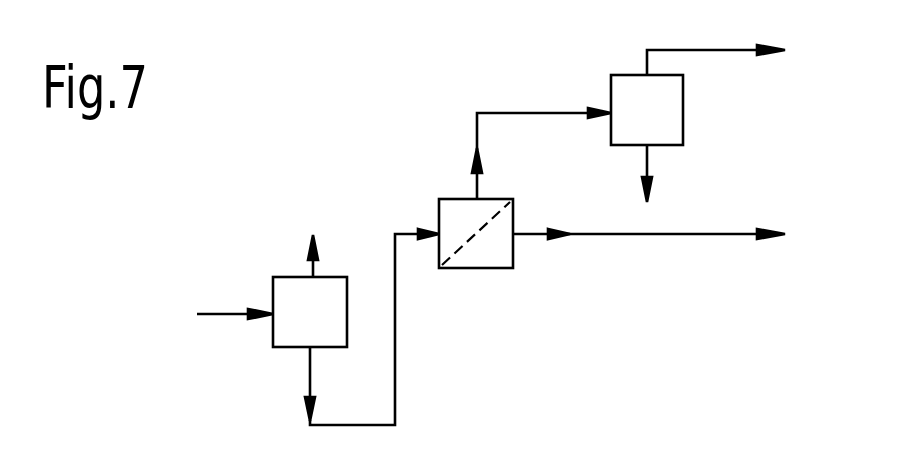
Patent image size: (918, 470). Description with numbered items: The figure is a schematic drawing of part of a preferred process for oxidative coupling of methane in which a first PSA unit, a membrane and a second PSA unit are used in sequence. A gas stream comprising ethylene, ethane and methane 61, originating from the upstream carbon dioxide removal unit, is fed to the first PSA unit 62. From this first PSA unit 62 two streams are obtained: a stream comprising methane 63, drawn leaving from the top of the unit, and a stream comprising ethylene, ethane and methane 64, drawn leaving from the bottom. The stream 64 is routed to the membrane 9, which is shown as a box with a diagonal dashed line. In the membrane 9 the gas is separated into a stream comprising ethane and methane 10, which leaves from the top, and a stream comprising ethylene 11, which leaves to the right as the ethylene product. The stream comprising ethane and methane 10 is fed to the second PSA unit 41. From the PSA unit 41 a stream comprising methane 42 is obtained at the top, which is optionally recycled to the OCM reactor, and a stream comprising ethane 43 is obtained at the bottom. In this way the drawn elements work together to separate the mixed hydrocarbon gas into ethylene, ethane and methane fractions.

The membrane 9 is at (476, 215).
The stream comprising ethane and methane 10 is at (541, 137).
The stream comprising ethylene 11 is at (649, 219).
The PSA unit 41 is at (647, 110).
The stream comprising methane 42 is at (716, 43).
The stream comprising ethane 43 is at (663, 173).
The gas stream comprising ethylene, ethane and methane 61 is at (235, 296).
The first PSA unit 62 is at (326, 312).
The stream comprising methane 63 is at (296, 256).
The stream comprising ethylene, ethane and methane 64 is at (372, 327).